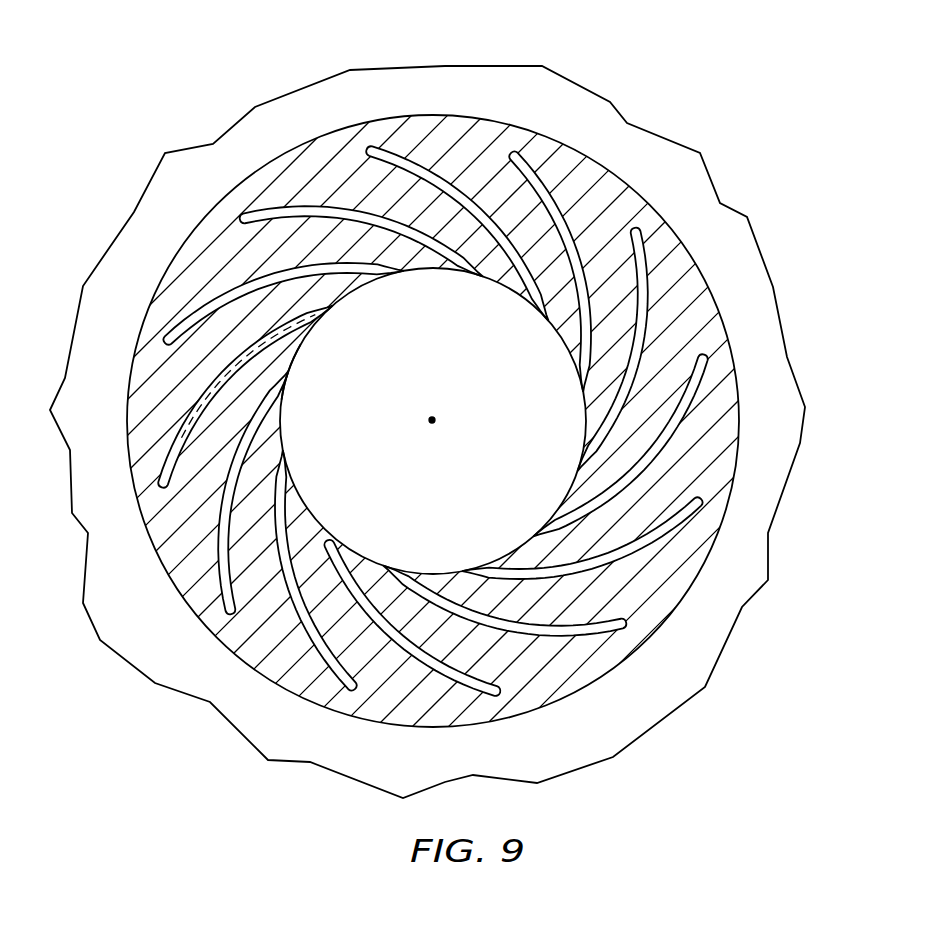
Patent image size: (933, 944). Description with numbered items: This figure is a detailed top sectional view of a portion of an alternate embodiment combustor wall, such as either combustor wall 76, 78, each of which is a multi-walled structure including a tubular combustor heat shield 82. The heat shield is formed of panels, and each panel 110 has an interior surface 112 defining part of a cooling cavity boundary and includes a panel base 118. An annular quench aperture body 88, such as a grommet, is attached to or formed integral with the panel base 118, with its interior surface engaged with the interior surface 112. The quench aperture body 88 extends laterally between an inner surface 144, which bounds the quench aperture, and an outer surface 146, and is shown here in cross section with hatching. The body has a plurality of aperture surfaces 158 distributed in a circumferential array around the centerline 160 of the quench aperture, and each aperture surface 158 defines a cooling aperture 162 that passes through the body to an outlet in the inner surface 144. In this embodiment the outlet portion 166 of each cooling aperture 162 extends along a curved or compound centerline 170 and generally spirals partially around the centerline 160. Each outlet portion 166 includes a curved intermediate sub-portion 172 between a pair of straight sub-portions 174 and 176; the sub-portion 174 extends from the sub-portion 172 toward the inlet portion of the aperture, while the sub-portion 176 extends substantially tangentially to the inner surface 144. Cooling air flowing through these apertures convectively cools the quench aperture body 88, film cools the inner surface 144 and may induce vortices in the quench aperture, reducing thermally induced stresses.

The combustor wall 76 is at (853, 86).
The combustor wall 78 is at (807, 124).
The tubular combustor heat shield 82 is at (469, 432).
The panel 110 is at (469, 432).
The interior surface 112 is at (469, 432).
The panel base 118 is at (788, 372).
The quench aperture body 88 is at (385, 409).
The outer surface 146 is at (646, 192).
The inner surface 144 is at (560, 330).
The centerline 160 is at (434, 418).
The cooling aperture 162 is at (293, 373).
The outlet portion 166 is at (375, 401).
The aperture surface 158 is at (388, 565).
The centerline 170 is at (281, 321).
The curved intermediate sub-portion 172 is at (240, 329).
The straight sub-portion 174 is at (240, 392).
The straight sub-portion 176 is at (240, 329).